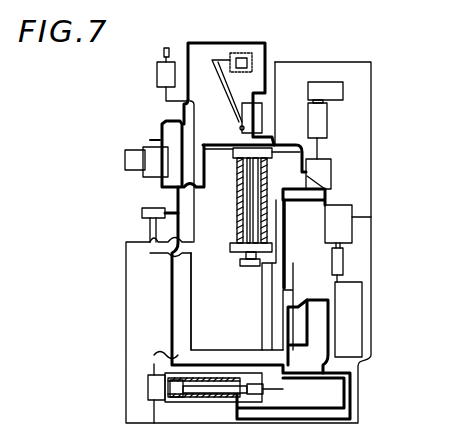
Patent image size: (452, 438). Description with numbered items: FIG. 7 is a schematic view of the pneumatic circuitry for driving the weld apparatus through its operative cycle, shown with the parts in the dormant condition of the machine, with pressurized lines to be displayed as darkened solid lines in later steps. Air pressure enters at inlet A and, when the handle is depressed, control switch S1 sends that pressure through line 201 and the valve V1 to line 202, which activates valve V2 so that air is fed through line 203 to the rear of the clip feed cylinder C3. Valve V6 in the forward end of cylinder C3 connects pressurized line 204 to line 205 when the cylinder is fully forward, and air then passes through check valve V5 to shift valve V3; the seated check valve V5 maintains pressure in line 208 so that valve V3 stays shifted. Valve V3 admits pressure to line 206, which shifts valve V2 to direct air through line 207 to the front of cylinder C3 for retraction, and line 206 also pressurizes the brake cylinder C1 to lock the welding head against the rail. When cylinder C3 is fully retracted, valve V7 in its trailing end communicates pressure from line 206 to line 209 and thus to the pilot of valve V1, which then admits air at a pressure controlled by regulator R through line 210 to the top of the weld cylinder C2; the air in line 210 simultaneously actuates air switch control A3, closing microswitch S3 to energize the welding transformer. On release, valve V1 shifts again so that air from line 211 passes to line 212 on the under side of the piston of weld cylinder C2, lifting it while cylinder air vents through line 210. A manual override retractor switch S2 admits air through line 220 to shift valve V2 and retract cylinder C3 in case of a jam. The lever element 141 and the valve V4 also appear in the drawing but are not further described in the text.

The line 201 is at (199, 42).
The line 202 is at (314, 62).
The control lever 141 is at (255, 37).
The brake cylinder C1 is at (157, 75).
The inlet A is at (160, 123).
The regulator R is at (142, 173).
The control switch S1 is at (262, 115).
The manual override retractor switch S2 is at (142, 215).
The microswitch S3 is at (334, 83).
The air switch control A3 is at (322, 118).
The weld cylinder C2 is at (237, 225).
The clip feed cylinder C3 is at (204, 401).
The valve V1 is at (331, 168).
The valve V2 is at (296, 266).
The valve V3 is at (353, 210).
The valve V4 is at (330, 262).
The check valve V5 is at (343, 263).
The valve V6 is at (232, 396).
The valve V7 is at (134, 390).
The line 203 is at (290, 320).
The line 204 is at (357, 374).
The line 205 is at (255, 365).
The line 206 is at (360, 428).
The line 207 is at (328, 407).
The line 208 is at (355, 245).
The line 209 is at (150, 353).
The line 210 is at (301, 153).
The line 211 is at (230, 144).
The line 212 is at (286, 198).
The line 220 is at (212, 279).